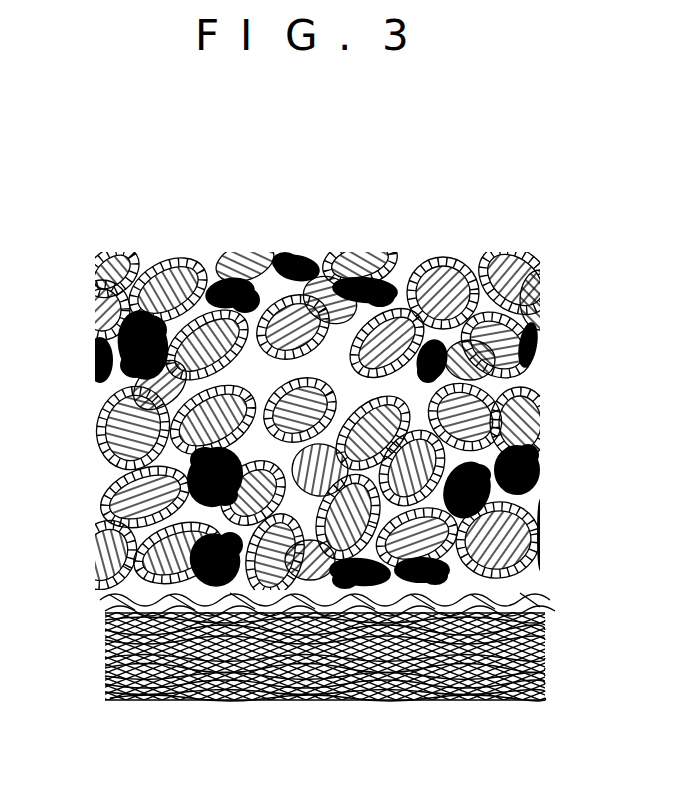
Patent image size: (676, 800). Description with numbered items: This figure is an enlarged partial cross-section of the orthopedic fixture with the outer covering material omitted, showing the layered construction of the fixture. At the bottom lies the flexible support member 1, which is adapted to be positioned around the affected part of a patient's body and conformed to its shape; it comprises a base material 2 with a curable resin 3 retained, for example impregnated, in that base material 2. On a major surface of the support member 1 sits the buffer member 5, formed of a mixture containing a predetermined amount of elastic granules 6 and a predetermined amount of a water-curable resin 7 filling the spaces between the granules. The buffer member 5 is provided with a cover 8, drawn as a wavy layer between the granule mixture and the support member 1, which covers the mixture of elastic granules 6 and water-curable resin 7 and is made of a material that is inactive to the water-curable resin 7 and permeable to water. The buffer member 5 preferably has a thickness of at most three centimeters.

The support member 1 is at (453, 667).
The base material 2 is at (363, 670).
The curable resin 3 is at (163, 700).
The buffer member 5 is at (319, 396).
The elastic granules 6 is at (257, 266).
The water-curable resin 7 is at (228, 268).
The cover 8 is at (520, 598).